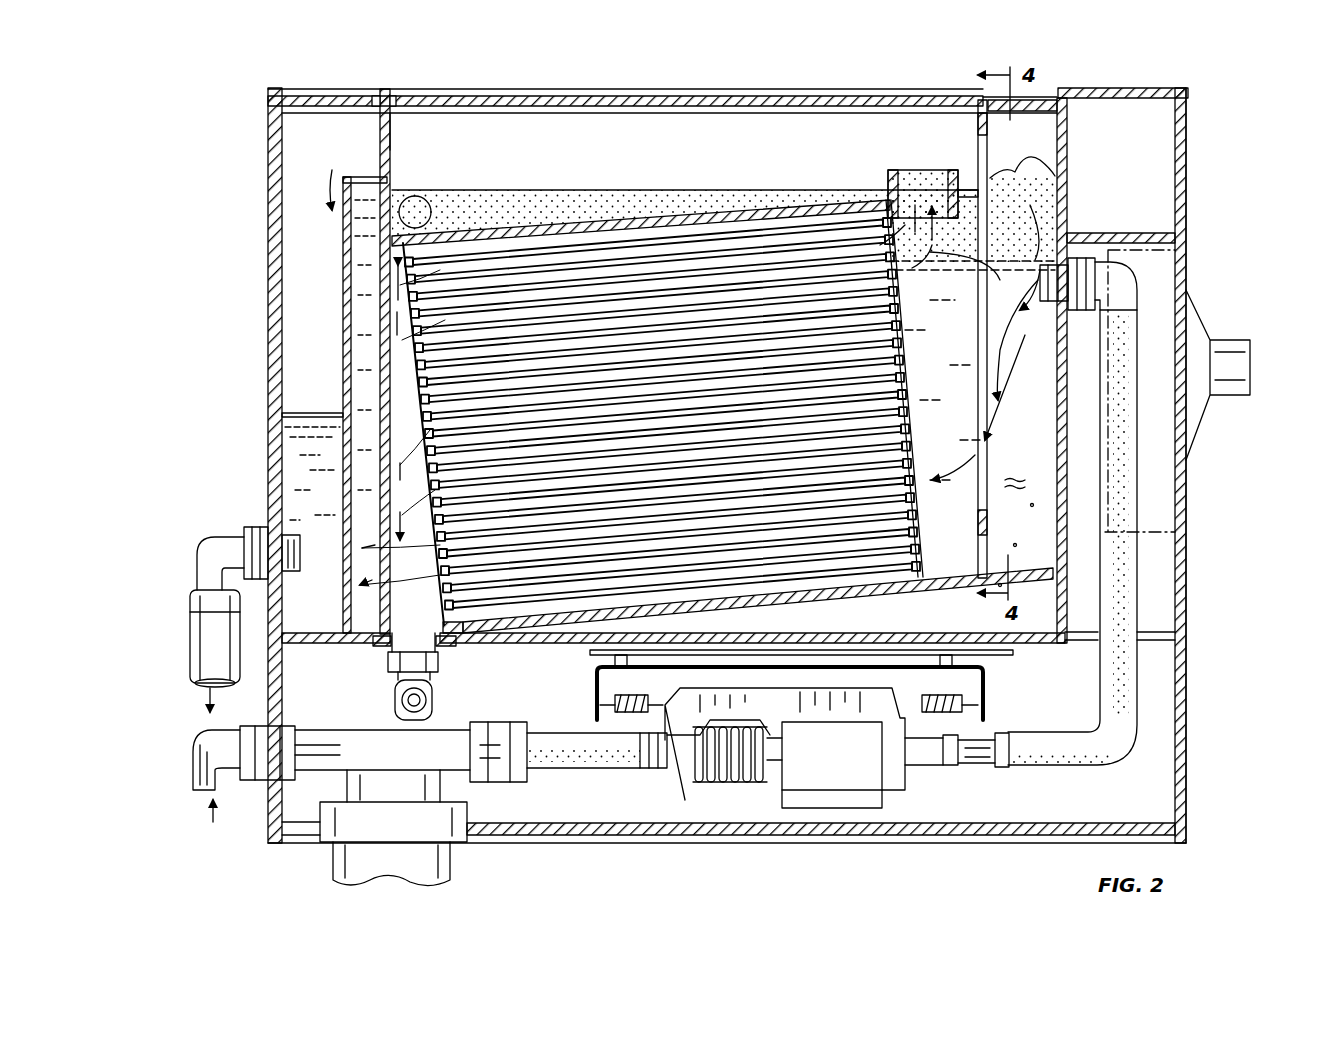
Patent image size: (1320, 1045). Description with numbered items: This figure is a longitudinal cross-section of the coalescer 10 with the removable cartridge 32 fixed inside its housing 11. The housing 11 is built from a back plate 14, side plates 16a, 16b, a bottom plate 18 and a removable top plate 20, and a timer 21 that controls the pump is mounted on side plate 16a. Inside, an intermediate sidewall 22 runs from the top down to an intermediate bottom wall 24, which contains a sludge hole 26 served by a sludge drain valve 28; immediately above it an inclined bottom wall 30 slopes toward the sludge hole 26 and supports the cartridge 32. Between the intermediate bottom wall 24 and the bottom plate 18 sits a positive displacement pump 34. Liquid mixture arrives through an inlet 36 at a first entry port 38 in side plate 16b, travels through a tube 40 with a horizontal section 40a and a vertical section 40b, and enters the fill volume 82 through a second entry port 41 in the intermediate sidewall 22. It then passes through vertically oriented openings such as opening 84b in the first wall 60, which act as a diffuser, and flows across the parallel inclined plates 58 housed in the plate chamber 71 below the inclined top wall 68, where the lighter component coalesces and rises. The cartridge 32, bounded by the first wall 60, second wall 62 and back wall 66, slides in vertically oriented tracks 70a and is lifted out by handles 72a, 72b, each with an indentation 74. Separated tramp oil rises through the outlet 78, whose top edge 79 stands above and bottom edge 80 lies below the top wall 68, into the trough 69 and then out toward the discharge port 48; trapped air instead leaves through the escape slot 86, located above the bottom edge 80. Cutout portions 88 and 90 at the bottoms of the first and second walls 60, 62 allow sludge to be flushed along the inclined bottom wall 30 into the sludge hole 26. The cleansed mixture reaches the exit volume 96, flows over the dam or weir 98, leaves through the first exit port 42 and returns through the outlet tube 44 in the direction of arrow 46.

The coalescer 10 is at (125, 162).
The housing 11 is at (262, 296).
The back plate 14 is at (280, 138).
The side plate 16a is at (1190, 546).
The side plate 16b is at (278, 410).
The bottom plate 18 is at (990, 838).
The removable top plate 20 is at (656, 96).
The timer 21 is at (1255, 360).
The intermediate sidewall 22 is at (1072, 188).
The intermediate bottom wall 24 is at (1020, 648).
The sludge hole 26 is at (413, 632).
The sludge drain valve 28 is at (393, 698).
The inclined bottom wall 30 is at (882, 594).
The removable cartridge 32 is at (378, 150).
The positive displacement pump 34 is at (828, 758).
The inlet 36 is at (190, 766).
The first entry port 38 is at (252, 785).
The tube 40 is at (1140, 688).
The horizontal section 40a is at (568, 770).
The vertical section 40b is at (1140, 600).
The second entry port 41 is at (1040, 255).
The first exit port 42 is at (285, 520).
The outlet tube 44 is at (198, 648).
The arrow 46 is at (210, 698).
The discharge port 48 is at (428, 198).
The parallel inclined plates 58 is at (662, 270).
The first wall 60 is at (1012, 448).
The second wall 62 is at (348, 385).
The back wall 66 is at (812, 110).
The inclined top wall 68 is at (740, 208).
The trough 69 is at (600, 190).
The vertically oriented tracks 70a is at (385, 92).
The plate chamber 71 is at (792, 300).
The handle 72a is at (992, 140).
The handle 72b is at (373, 110).
The indentation 74 is at (396, 130).
The outlet 78 is at (888, 182).
The top edge 79 is at (908, 170).
The bottom edge 80 is at (982, 220).
The fill volume 82 is at (1019, 472).
The vertically oriented opening 84b is at (978, 388).
The escape slot 86 is at (972, 188).
The cutout portion 88 is at (1012, 545).
The cutout portion 90 is at (362, 612).
The exit volume 96 is at (298, 468).
The dam or weir 98 is at (350, 288).